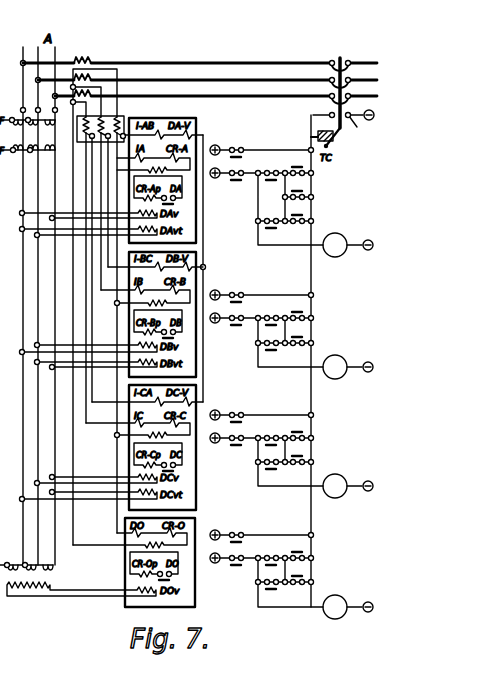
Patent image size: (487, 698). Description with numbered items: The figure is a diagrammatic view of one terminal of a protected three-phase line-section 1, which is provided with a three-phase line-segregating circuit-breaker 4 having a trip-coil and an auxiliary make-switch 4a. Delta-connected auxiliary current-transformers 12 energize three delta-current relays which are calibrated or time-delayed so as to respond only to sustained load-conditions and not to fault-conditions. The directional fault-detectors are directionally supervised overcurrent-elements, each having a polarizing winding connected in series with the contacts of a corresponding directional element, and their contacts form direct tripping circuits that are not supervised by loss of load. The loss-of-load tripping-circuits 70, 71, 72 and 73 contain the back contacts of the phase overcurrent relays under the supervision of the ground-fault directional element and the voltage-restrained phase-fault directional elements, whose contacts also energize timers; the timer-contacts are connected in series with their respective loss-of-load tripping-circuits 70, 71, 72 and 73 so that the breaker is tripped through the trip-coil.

The protected three-phase line-section 1 is at (173, 96).
The three-phase line-segregating circuit-breaker 4 is at (340, 88).
The auxiliary make-switch 4a is at (343, 124).
The delta-connected auxiliary current-transformers 12 is at (122, 124).
The loss-of-load tripping-circuit 70 is at (253, 178).
The loss-of-load tripping-circuit 71 is at (253, 323).
The loss-of-load tripping-circuit 72 is at (253, 443).
The loss-of-load tripping-circuit 73 is at (253, 563).